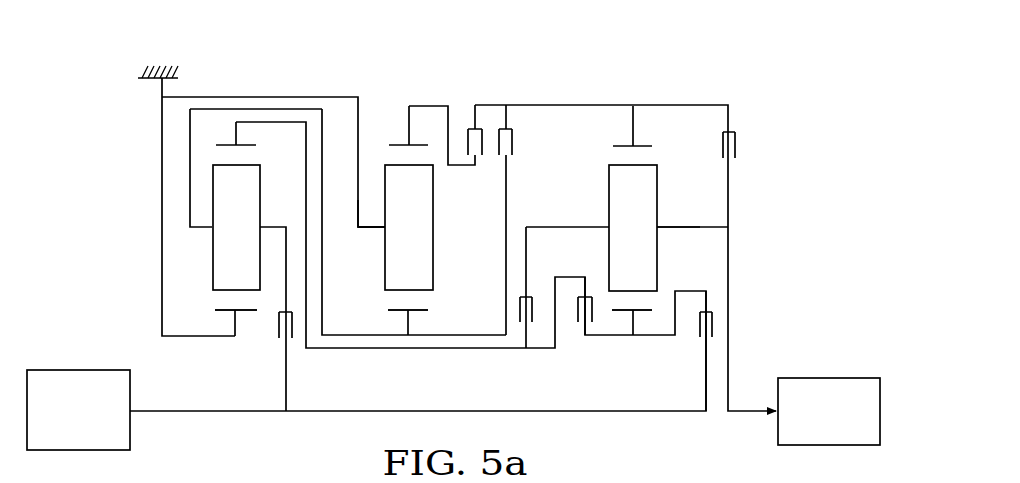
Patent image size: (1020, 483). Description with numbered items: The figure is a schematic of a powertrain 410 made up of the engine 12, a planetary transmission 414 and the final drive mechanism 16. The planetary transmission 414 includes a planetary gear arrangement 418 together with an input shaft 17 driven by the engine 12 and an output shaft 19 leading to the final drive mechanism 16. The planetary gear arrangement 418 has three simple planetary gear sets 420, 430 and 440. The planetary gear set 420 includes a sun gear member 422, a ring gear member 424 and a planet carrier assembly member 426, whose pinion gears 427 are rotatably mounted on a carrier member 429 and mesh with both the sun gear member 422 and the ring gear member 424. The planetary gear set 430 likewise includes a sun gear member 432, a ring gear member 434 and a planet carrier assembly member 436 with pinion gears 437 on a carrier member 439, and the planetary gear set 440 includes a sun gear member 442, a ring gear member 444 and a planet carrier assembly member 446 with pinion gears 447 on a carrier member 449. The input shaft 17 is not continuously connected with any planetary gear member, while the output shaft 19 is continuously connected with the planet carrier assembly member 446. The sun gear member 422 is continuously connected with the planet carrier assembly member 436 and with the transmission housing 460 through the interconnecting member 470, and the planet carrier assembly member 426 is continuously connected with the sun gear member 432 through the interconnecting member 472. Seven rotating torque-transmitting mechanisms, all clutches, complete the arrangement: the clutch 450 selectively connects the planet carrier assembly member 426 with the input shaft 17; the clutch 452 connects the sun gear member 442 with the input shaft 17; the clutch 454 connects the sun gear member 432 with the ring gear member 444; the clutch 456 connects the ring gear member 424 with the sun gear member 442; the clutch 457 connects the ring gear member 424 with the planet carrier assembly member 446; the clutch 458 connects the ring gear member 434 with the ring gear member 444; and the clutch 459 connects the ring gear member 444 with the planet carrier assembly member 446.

The engine 12 is at (97, 357).
The final drive mechanism 16 is at (812, 365).
The input shaft 17 is at (190, 412).
The output shaft 19 is at (745, 413).
The powertrain 410 is at (130, 173).
The planetary transmission 414 is at (571, 88).
The planetary gear arrangement 418 is at (678, 88).
The planetary gear set 420 is at (225, 314).
The sun gear member 422 is at (247, 312).
The ring gear member 424 is at (230, 145).
The planet carrier assembly member 426 is at (203, 232).
The pinion gears 427 is at (236, 227).
The carrier member 429 is at (197, 232).
The planetary gear set 430 is at (398, 313).
The sun gear member 432 is at (418, 313).
The ring gear member 434 is at (400, 144).
The planet carrier assembly member 436 is at (381, 234).
The pinion gears 437 is at (409, 227).
The carrier member 439 is at (372, 230).
The planetary gear set 440 is at (625, 313).
The sun gear member 442 is at (645, 312).
The ring gear member 444 is at (625, 145).
The planet carrier assembly member 446 is at (663, 226).
The pinion gears 447 is at (633, 228).
The carrier member 449 is at (667, 229).
The clutch 450 is at (293, 343).
The clutch 452 is at (718, 318).
The clutch 454 is at (523, 128).
The clutch 456 is at (572, 312).
The clutch 457 is at (508, 318).
The clutch 458 is at (465, 128).
The clutch 459 is at (740, 133).
The transmission housing 460 is at (143, 72).
The interconnecting member 470 is at (162, 212).
The interconnecting member 472 is at (358, 336).